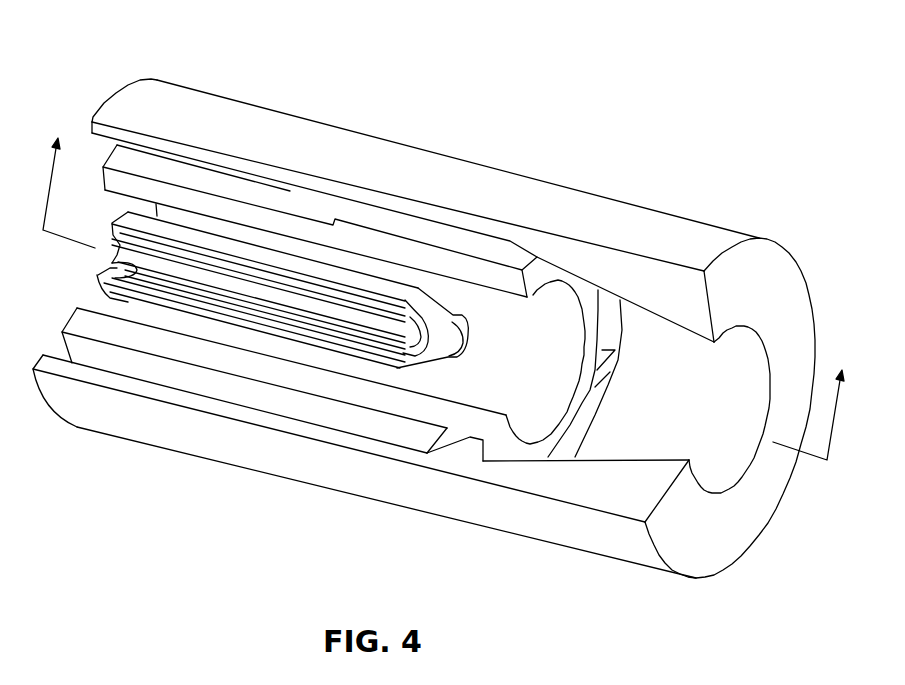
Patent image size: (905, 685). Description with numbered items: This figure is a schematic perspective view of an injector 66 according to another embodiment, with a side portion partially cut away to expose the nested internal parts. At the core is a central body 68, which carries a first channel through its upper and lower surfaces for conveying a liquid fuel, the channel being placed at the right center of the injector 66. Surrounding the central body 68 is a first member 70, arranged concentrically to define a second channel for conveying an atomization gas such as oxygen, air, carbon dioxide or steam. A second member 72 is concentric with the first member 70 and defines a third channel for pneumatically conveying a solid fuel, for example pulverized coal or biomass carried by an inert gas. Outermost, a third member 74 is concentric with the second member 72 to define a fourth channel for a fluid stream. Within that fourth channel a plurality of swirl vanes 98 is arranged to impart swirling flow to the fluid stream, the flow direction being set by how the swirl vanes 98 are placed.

The injector 66 is at (690, 53).
The central body 68 is at (118, 261).
The first member 70 is at (108, 297).
The second member 72 is at (262, 218).
The third member 74 is at (487, 170).
The swirl vanes 98 is at (430, 443).